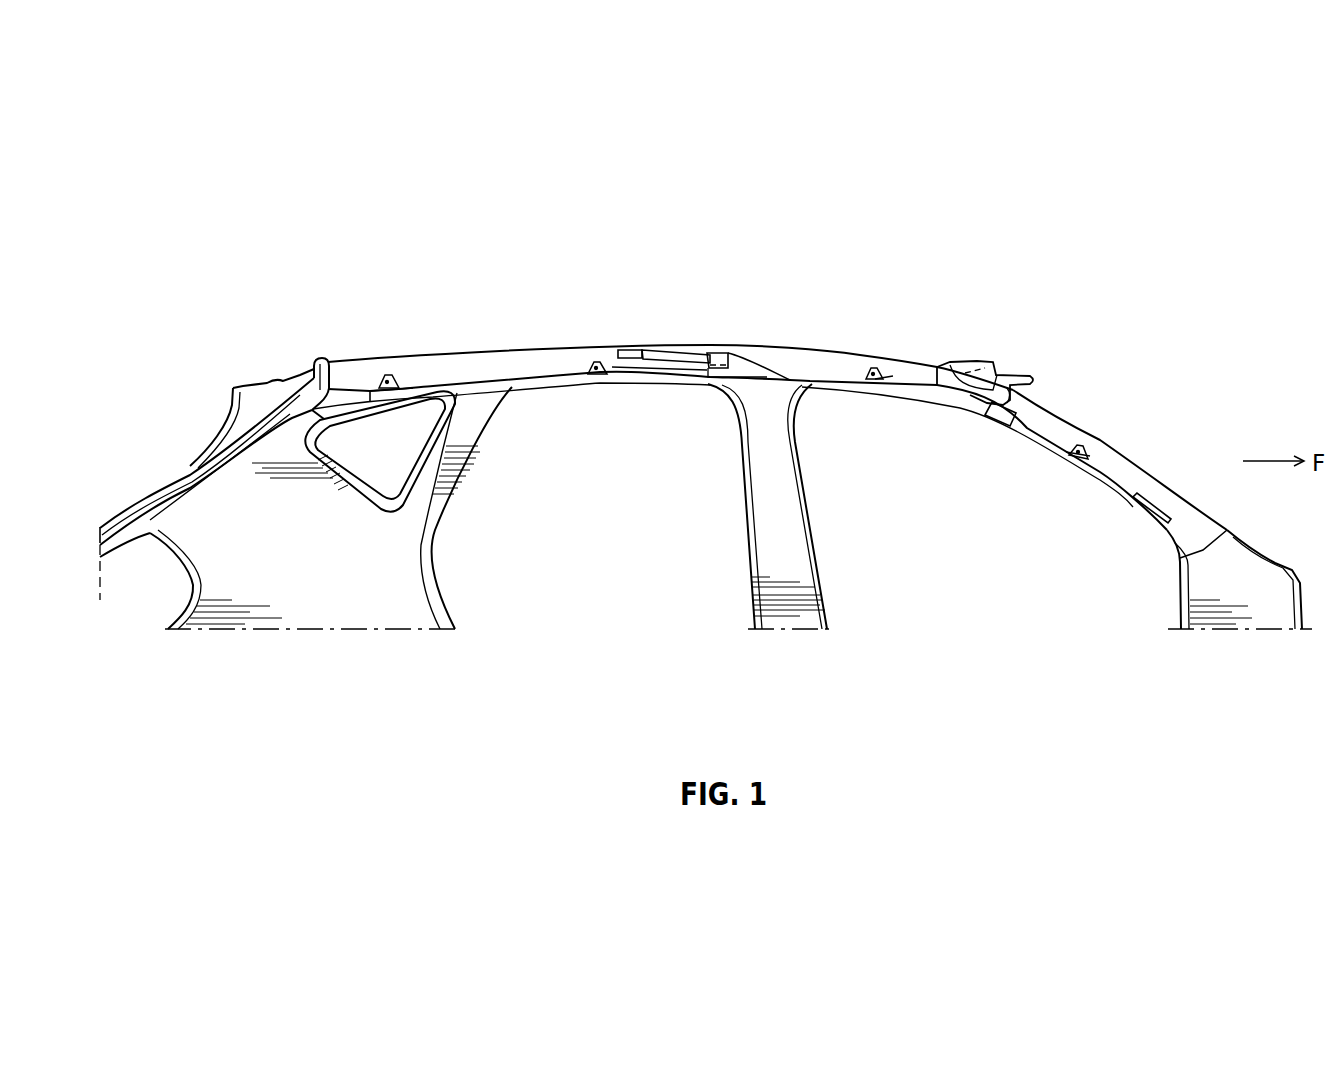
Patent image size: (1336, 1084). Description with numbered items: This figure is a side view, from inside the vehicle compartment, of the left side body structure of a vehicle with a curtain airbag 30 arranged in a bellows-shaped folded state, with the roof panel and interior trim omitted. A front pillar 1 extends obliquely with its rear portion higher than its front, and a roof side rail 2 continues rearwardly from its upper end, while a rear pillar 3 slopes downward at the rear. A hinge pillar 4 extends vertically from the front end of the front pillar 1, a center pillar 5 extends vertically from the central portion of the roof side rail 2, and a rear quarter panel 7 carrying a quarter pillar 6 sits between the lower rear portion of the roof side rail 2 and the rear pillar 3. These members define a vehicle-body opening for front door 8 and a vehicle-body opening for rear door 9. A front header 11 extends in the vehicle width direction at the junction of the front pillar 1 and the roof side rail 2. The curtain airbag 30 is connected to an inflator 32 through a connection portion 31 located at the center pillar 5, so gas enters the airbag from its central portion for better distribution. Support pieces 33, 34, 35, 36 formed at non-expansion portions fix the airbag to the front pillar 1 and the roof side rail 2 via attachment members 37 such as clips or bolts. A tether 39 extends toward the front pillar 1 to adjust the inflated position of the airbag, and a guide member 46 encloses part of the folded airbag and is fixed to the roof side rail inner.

The front pillar 1 is at (1095, 437).
The roof side rail 2 is at (528, 344).
The rear pillar 3 is at (165, 475).
The hinge pillar 4 is at (1178, 588).
The center pillar 5 is at (746, 559).
The quarter pillar 6 is at (478, 438).
The rear quarter panel 7 is at (327, 579).
The vehicle-body opening for front door 8 is at (967, 584).
The vehicle-body opening for rear door 9 is at (591, 574).
The front header 11 is at (972, 362).
The curtain airbag 30 is at (802, 370).
The connection portion 31 is at (746, 352).
The inflator 32 is at (666, 350).
The support piece 33 is at (1092, 458).
The support piece 34 is at (886, 375).
The support piece 35 is at (612, 370).
The support piece 36 is at (397, 368).
The attachment member 37 is at (384, 376).
The tether 39 is at (1158, 510).
The guide member 46 is at (997, 420).